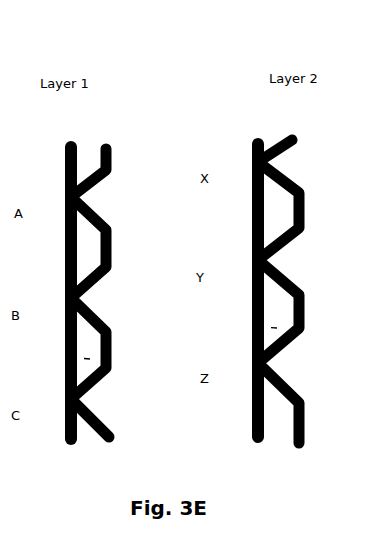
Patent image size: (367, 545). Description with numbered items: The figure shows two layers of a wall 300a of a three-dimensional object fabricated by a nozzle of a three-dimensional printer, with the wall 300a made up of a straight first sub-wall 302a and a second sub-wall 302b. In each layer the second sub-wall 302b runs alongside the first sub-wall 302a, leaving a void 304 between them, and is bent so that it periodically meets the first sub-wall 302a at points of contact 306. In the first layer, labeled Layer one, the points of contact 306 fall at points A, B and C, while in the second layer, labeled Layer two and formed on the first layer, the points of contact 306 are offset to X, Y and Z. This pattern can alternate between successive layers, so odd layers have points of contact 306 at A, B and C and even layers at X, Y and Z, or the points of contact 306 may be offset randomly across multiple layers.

The wall 300a is at (124, 50).
The first sub-wall 302a is at (64, 228).
The second sub-wall 302b is at (113, 155).
The void 304 is at (90, 359).
The points of contact 306 is at (30, 208).